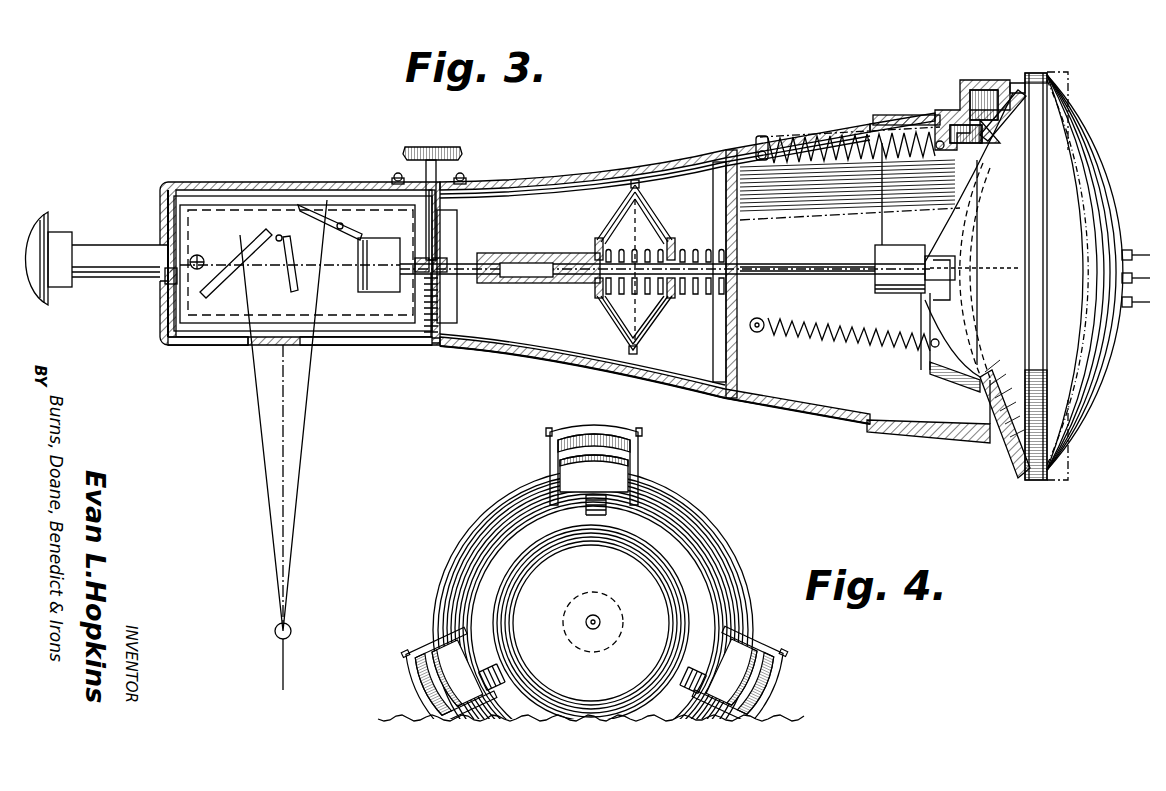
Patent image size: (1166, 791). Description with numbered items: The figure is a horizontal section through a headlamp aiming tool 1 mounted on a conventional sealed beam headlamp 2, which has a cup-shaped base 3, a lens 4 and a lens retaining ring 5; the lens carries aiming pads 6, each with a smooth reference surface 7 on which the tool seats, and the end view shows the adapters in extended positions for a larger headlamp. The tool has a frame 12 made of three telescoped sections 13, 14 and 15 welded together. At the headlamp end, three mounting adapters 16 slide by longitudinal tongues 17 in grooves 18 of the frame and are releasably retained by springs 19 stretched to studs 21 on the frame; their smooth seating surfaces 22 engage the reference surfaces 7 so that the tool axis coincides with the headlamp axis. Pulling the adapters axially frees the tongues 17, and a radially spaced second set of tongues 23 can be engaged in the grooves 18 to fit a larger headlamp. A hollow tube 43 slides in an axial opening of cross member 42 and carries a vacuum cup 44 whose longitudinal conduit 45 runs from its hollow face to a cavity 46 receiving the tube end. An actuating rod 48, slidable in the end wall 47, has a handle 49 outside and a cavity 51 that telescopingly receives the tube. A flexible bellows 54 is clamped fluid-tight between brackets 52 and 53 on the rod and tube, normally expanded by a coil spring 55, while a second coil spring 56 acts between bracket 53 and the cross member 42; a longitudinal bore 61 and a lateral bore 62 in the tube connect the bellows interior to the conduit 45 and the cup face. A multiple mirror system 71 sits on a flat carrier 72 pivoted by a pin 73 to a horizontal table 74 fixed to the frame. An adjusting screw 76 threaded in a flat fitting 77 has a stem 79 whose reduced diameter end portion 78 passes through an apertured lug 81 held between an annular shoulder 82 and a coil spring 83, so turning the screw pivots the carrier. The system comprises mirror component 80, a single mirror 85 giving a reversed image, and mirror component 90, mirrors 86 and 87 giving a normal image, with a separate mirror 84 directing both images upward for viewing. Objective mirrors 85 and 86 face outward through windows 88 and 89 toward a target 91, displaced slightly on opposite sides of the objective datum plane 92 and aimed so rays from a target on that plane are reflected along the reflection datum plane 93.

In FIG. 3, the headlamp aiming tool 1 is at (653, 165).
In FIG. 4, the headlamp aiming tool 1 is at (750, 541).
In FIG. 3, the sealed beam headlamp 2 is at (1099, 151).
In FIG. 3, the cup-shaped base 3 is at (1085, 388).
In FIG. 3, the lens 4 is at (998, 430).
In FIG. 3, the lens retaining ring 5 is at (1037, 202).
In FIG. 3, the aiming pad 6 is at (1012, 108).
In FIG. 3, the reference surface 7 is at (1048, 88).
In FIG. 3, the frame 12 is at (170, 345).
In FIG. 3, the telescoped section 13 is at (492, 345).
In FIG. 3, the telescoped section 14 is at (784, 417).
In FIG. 3, the telescoped section 15 is at (935, 443).
In FIG. 4, the telescoped section 15 is at (446, 550).
In FIG. 3, the mounting adapter 16 is at (982, 79).
In FIG. 4, the mounting adapter 16 is at (592, 424).
In FIG. 4, the longitudinal tongue 17 is at (548, 430).
In FIG. 4, the groove 18 is at (634, 476).
In FIG. 3, the spring 19 is at (828, 140).
In FIG. 4, the spring 19 is at (606, 512).
In FIG. 3, the stud 21 is at (764, 136).
In FIG. 3, the seating surface 22 is at (1012, 80).
In FIG. 4, the seating surface 22 is at (558, 442).
In FIG. 4, the second tongue 23 is at (556, 455).
In FIG. 3, the cross member 42 is at (738, 232).
In FIG. 3, the hollow tube 43 is at (800, 258).
In FIG. 3, the vacuum cup 44 is at (958, 212).
In FIG. 4, the vacuum cup 44 is at (591, 623).
In FIG. 3, the longitudinal conduit 45 is at (930, 285).
In FIG. 4, the longitudinal conduit 45 is at (598, 618).
In FIG. 3, the cavity 46 is at (876, 300).
In FIG. 3, the end wall 47 is at (160, 216).
In FIG. 3, the actuating rod 48 is at (546, 253).
In FIG. 3, the handle 49 is at (48, 222).
In FIG. 3, the cavity 51 is at (540, 278).
In FIG. 3, the bracket 52 is at (600, 298).
In FIG. 3, the bracket 53 is at (675, 298).
In FIG. 3, the flexible bellows 54 is at (648, 320).
In FIG. 3, the coil spring 55 is at (625, 294).
In FIG. 3, the second coil spring 56 is at (706, 250).
In FIG. 3, the longitudinal bore 61 is at (836, 266).
In FIG. 3, the lateral bore 62 is at (655, 258).
In FIG. 3, the multiple mirror system 71 is at (252, 215).
In FIG. 3, the mirror carrier 72 is at (203, 212).
In FIG. 3, the pin 73 is at (204, 258).
In FIG. 3, the table 74 is at (452, 322).
In FIG. 3, the adjusting screw 76 is at (450, 152).
In FIG. 3, the flat fitting 77 is at (466, 180).
In FIG. 3, the reduced diameter end portion 78 is at (440, 306).
In FIG. 3, the stem 79 is at (437, 230).
In FIG. 3, the mirror component 80 is at (197, 296).
In FIG. 3, the apertured lug 81 is at (446, 264).
In FIG. 3, the annular shoulder 82 is at (420, 258).
In FIG. 3, the coil spring 83 is at (426, 292).
In FIG. 3, the single mirror 84 is at (382, 284).
In FIG. 3, the mirror 85 is at (226, 285).
In FIG. 3, the mirror 86 is at (342, 228).
In FIG. 3, the mirror 87 is at (290, 252).
In FIG. 3, the window 88 is at (233, 347).
In FIG. 3, the window 89 is at (342, 348).
In FIG. 3, the mirror component 90 is at (279, 233).
In FIG. 3, the target 91 is at (278, 348).
In FIG. 3, the objective datum plane 92 is at (287, 446).
In FIG. 3, the reflection datum plane 93 is at (338, 266).